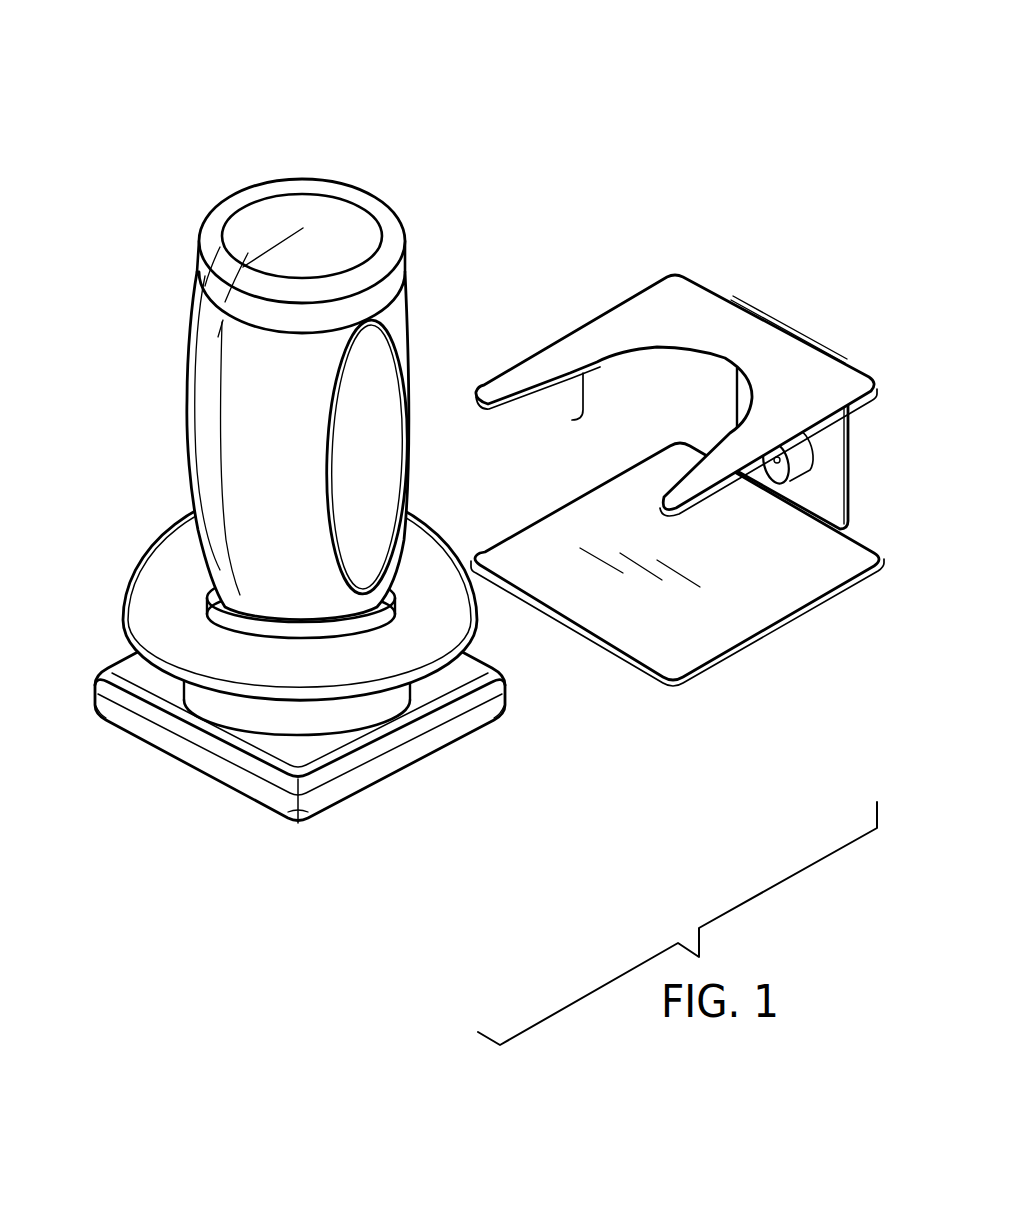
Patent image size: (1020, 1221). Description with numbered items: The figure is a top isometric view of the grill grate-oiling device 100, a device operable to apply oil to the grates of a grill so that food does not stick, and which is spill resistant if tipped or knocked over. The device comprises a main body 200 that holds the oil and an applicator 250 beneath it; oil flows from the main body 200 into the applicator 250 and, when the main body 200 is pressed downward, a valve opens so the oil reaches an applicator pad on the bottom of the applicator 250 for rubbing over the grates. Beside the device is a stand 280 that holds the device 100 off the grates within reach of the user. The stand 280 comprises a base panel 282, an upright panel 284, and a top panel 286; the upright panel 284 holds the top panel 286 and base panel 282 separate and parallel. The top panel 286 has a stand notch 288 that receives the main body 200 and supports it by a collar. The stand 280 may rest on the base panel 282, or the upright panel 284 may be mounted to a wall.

The grill grate-oiling device 100 is at (474, 437).
The main body 200 is at (105, 188).
The applicator 250 is at (282, 847).
The stand 280 is at (702, 439).
The base panel 282 is at (745, 652).
The upright panel 284 is at (848, 462).
The top panel 286 is at (675, 272).
The stand notch 288 is at (572, 420).